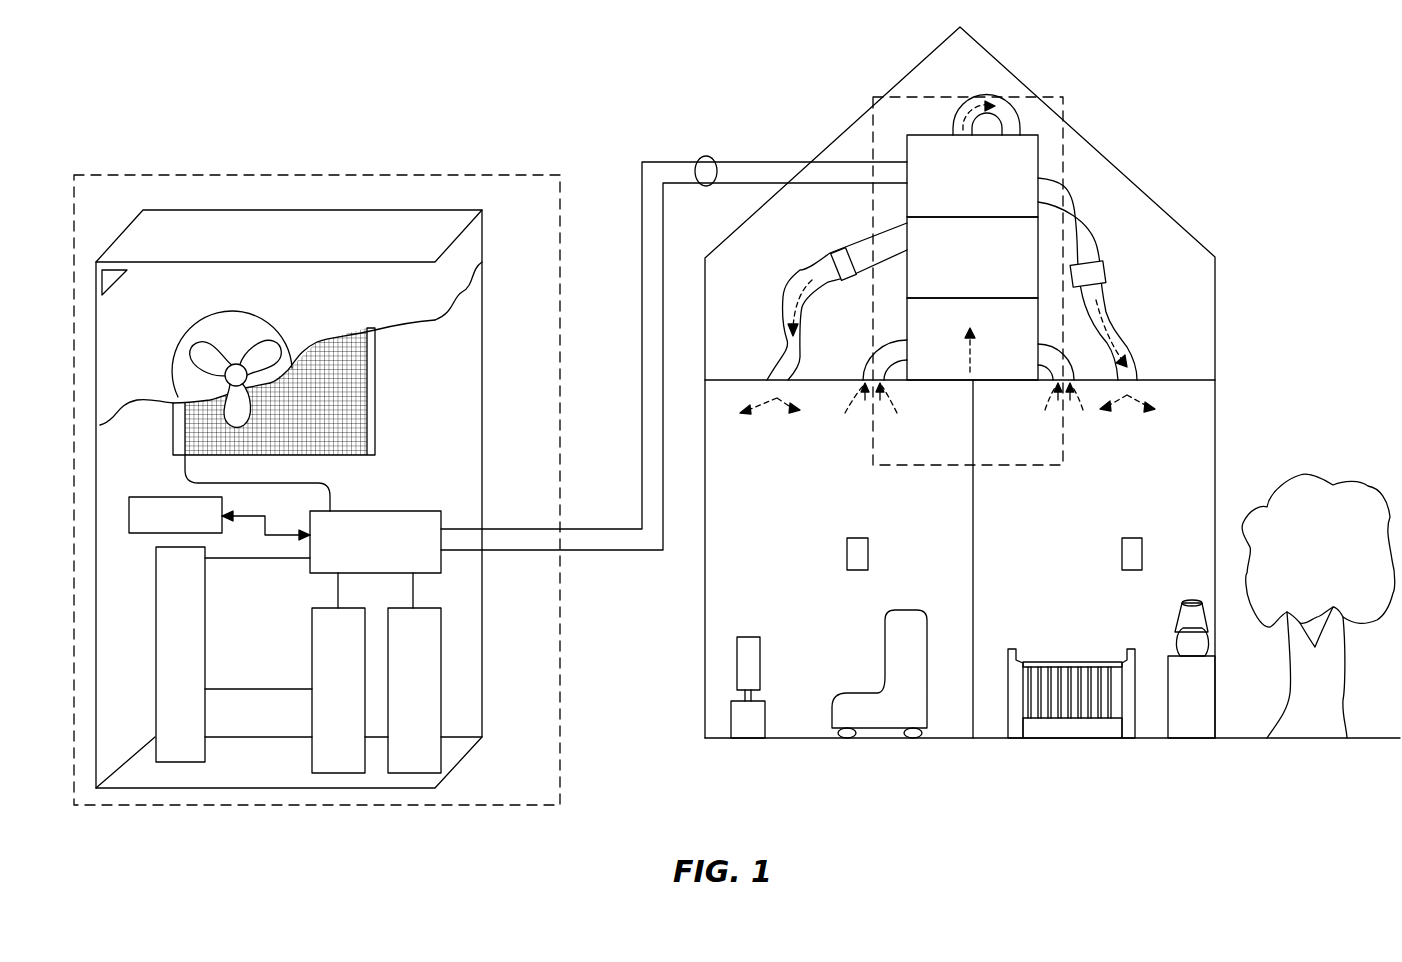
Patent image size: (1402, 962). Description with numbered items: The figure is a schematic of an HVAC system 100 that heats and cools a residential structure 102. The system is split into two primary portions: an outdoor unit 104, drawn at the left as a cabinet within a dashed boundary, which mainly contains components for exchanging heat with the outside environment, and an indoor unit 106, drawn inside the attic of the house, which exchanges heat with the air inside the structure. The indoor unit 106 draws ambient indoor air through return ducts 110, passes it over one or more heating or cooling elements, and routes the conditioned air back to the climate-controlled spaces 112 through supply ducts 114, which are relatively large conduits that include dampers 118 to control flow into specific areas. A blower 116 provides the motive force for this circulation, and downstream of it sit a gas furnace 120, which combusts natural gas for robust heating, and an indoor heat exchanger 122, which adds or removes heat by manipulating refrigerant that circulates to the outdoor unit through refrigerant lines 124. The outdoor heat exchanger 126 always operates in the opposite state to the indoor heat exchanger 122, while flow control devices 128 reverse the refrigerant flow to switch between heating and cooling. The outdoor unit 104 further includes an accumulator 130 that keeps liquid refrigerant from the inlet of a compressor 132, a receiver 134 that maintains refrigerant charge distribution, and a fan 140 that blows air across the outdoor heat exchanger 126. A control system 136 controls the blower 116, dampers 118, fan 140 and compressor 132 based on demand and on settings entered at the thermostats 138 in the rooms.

The HVAC system 100 is at (622, 71).
The residential structure 102 is at (1138, 188).
The outdoor unit 104 is at (263, 175).
The indoor unit 106 is at (902, 97).
The return ducts 110 is at (875, 368).
The climate-controlled spaces 112 is at (857, 500).
The supply ducts 114 is at (787, 348).
The blower 116 is at (917, 332).
The dampers 118 is at (830, 253).
The gas furnace 120 is at (1032, 263).
The indoor heat exchanger 122 is at (1027, 152).
The refrigerant lines 124 is at (709, 157).
The outdoor heat exchanger 126 is at (352, 412).
The flow control devices 128 is at (395, 511).
The accumulator 130 is at (312, 742).
The compressor 132 is at (205, 650).
The receiver 134 is at (441, 670).
The control system 136 is at (129, 497).
The thermostat 138 is at (855, 553).
The fan 140 is at (215, 315).